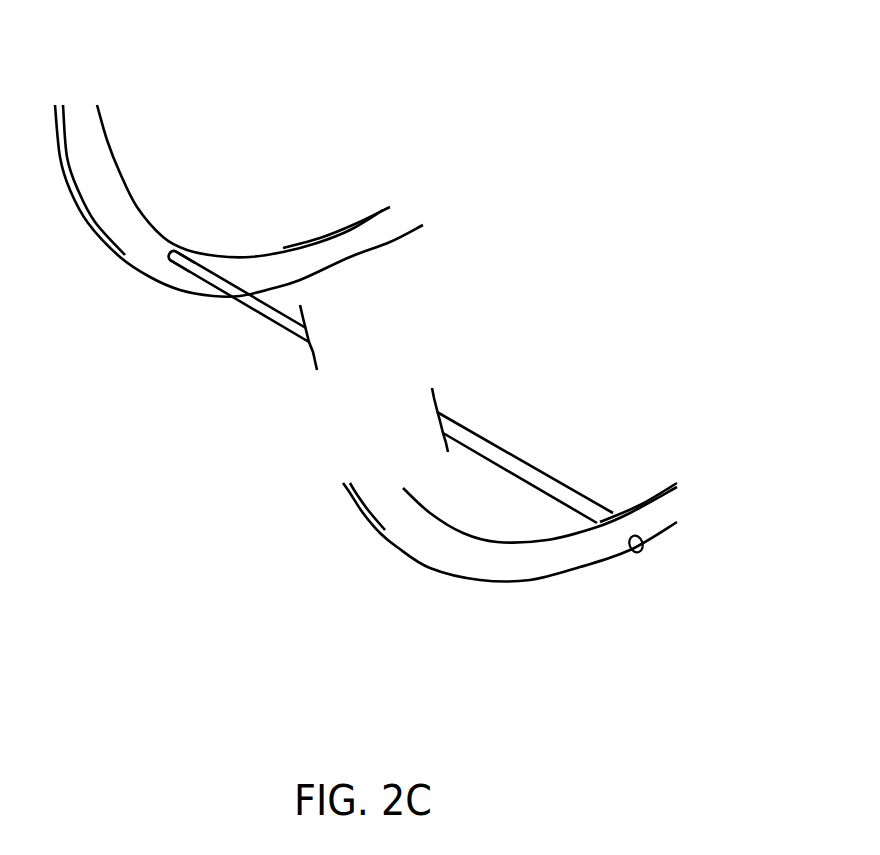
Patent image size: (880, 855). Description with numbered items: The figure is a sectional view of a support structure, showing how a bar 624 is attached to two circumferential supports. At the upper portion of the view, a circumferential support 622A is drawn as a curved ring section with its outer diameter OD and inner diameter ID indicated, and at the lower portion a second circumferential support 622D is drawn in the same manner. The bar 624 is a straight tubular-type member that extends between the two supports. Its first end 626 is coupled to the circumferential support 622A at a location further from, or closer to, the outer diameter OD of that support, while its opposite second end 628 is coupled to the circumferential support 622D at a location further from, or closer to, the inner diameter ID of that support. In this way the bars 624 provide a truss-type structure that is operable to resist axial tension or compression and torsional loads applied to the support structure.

The circumferential support 622A is at (105, 140).
The circumferential support 622D is at (362, 522).
The bar 624 is at (273, 323).
The first end 626 is at (187, 265).
The second end 628 is at (631, 553).